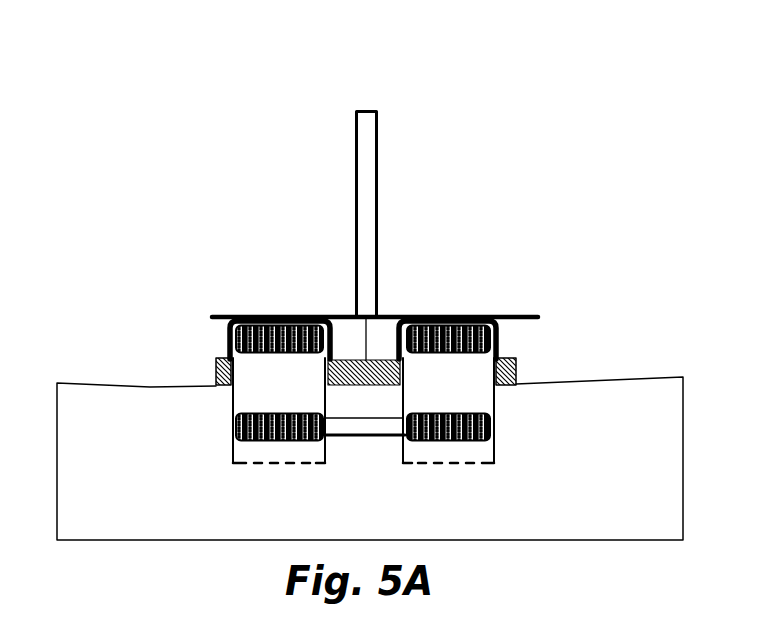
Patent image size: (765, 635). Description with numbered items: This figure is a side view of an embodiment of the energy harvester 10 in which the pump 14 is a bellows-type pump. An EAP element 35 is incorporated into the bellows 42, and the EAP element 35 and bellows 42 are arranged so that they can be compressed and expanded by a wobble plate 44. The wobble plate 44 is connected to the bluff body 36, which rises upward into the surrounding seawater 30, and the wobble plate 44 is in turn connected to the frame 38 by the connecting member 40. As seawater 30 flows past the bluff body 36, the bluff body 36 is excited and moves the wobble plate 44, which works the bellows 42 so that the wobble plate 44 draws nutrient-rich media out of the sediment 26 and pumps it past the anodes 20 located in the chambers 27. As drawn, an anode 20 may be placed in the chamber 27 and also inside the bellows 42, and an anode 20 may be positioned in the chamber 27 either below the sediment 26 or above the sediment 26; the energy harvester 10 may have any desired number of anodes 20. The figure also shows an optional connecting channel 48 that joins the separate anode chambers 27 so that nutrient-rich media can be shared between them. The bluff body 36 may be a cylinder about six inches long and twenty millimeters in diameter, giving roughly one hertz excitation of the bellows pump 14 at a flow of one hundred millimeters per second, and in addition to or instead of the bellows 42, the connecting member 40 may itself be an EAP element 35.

The energy harvester 10 is at (104, 80).
The pump 14 is at (193, 115).
The anode 20 is at (284, 354).
The sediment 26 is at (120, 521).
The chamber 27 is at (412, 394).
The seawater 30 is at (613, 176).
The EAP element 35 is at (432, 392).
The bluff body 36 is at (378, 180).
The frame 38 is at (216, 362).
The connecting member 40 is at (373, 339).
The bellows 42 is at (500, 345).
The wobble plate 44 is at (518, 313).
The connecting channel 48 is at (377, 437).